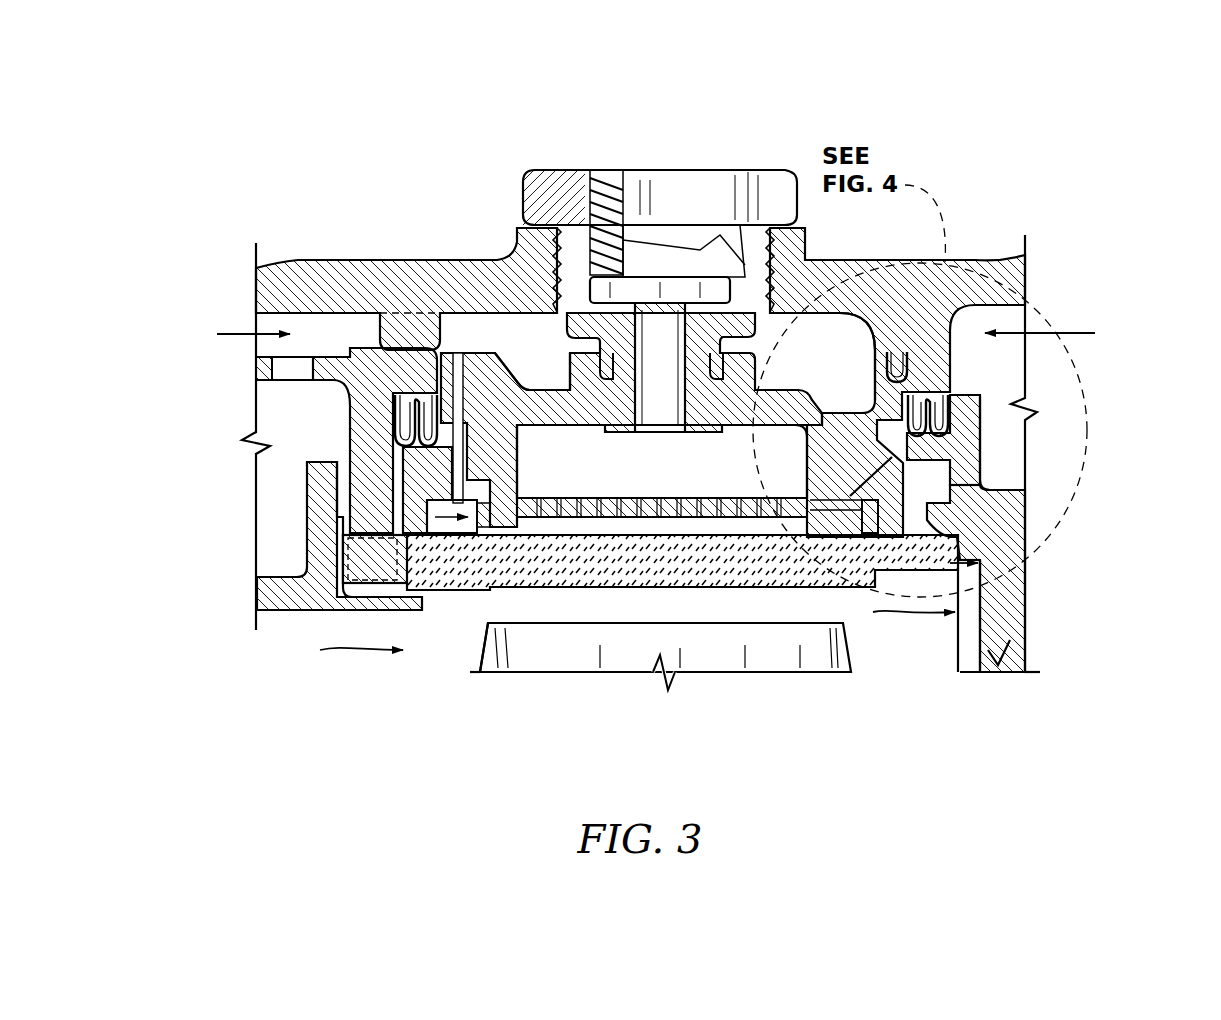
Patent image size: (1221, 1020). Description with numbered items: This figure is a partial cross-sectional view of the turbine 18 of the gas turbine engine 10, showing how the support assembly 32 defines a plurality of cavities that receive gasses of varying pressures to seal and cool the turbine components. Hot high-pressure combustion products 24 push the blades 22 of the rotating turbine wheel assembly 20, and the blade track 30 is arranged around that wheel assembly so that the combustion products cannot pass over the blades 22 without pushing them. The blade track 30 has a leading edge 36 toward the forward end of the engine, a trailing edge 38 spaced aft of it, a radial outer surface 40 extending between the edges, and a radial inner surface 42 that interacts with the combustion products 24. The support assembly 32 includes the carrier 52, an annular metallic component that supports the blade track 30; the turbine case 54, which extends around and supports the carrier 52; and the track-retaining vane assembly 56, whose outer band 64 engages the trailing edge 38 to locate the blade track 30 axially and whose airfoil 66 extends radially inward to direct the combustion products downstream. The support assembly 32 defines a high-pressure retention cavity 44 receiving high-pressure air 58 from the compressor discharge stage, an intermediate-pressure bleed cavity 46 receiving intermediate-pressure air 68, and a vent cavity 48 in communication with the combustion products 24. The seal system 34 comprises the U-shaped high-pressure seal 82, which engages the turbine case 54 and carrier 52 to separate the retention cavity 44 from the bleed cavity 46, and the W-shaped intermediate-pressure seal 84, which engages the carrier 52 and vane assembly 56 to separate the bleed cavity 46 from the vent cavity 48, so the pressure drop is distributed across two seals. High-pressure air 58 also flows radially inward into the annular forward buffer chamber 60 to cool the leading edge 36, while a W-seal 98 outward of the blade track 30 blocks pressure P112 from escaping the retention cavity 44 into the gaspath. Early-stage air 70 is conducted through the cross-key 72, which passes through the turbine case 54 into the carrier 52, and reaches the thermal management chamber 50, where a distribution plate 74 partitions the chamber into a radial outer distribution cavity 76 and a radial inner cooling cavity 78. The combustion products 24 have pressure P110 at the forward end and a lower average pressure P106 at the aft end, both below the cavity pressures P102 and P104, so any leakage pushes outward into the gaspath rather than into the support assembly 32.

The gas turbine engine 10 is at (965, 125).
The turbine 18 is at (1025, 195).
The rotating turbine wheel assembly 20 is at (563, 650).
The blades 22 is at (618, 657).
The hot high-pressure combustion products 24 is at (360, 652).
The blade track 30 is at (489, 620).
The support assembly 32 is at (350, 248).
The seal system 34 is at (963, 374).
The leading edge 36 is at (336, 570).
The trailing edge 38 is at (985, 565).
The radial outer surface 40 is at (552, 535).
The radial inner surface 42 is at (553, 590).
The high-pressure retention cavity 44 is at (830, 338).
The intermediate-pressure bleed cavity 46 is at (1013, 455).
The vent cavity 48 is at (966, 598).
The thermal management chamber 50 is at (775, 448).
The carrier 52 is at (542, 385).
The turbine case 54 is at (412, 258).
The track-retaining vane assembly 56 is at (1028, 553).
The high-pressure air 58 is at (240, 334).
The forward buffer chamber 60 is at (340, 522).
The outer band 64 is at (985, 483).
The airfoil 66 is at (1012, 625).
The intermediate-pressure air 68 is at (1068, 333).
The early-stage air 70 is at (653, 363).
The cross-key 72 is at (553, 182).
The distribution plate 74 is at (728, 498).
The radial outer distribution cavity 76 is at (655, 470).
The radial inner cooling cavity 78 is at (748, 525).
The high-pressure seal 82 is at (909, 350).
The intermediate-pressure seal 84 is at (960, 425).
The W-seal 98 is at (315, 340).
The cavity pressure P102 is at (822, 262).
The cavity pressure P104 is at (1026, 300).
The aft gas path pressure P106 is at (962, 490).
The forward gas path pressure P110 is at (340, 502).
The retention cavity pressure P112 is at (257, 400).